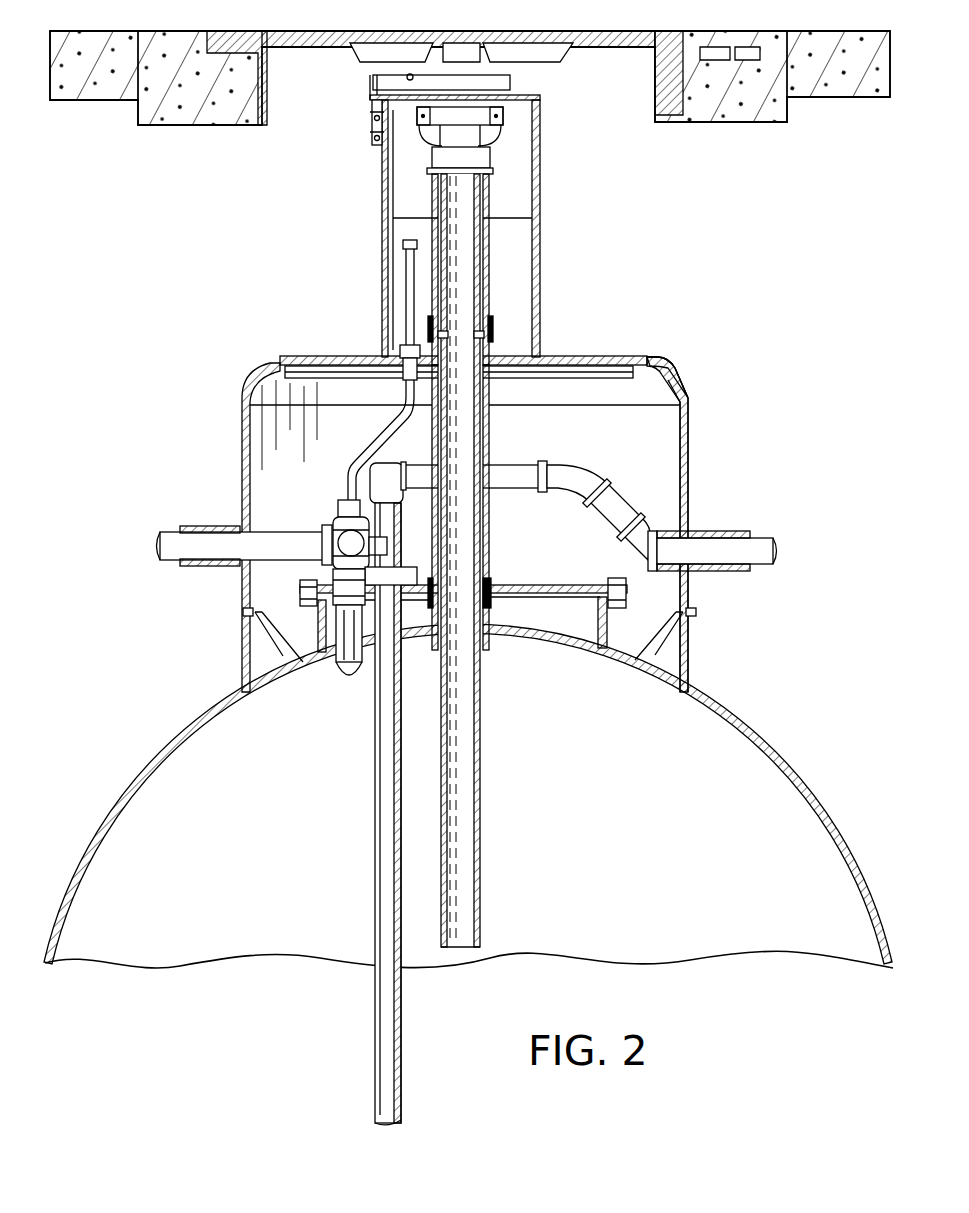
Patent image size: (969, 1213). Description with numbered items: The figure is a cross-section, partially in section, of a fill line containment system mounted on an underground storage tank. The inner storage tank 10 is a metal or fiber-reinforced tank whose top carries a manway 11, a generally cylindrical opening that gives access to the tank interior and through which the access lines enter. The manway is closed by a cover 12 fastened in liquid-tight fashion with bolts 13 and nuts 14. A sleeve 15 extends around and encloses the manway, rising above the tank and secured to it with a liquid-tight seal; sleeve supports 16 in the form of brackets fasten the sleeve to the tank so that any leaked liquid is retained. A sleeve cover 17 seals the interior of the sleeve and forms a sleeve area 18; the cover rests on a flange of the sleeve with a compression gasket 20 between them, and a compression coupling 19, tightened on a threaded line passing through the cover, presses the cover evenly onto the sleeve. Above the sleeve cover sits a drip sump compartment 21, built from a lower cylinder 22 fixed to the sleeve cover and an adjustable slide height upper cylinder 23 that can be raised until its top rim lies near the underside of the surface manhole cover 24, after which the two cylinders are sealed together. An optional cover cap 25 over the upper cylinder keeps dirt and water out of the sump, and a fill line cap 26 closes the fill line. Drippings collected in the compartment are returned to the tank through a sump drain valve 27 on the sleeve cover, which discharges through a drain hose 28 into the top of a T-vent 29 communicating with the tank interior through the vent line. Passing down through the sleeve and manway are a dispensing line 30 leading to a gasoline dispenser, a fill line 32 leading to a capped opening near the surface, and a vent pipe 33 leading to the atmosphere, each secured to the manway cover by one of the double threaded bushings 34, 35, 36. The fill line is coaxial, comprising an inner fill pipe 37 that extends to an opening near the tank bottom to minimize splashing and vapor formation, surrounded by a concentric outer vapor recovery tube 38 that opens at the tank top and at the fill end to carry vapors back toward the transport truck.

The inner storage tank 10 is at (187, 738).
The manway 11 is at (607, 628).
The cover 12 is at (538, 583).
The bolts 13 is at (612, 578).
The nuts 14 is at (623, 597).
The sleeve 15 is at (688, 440).
The sleeve supports 16 is at (262, 632).
The sleeve cover 17 is at (600, 356).
The sleeve area 18 is at (642, 405).
The compression coupling 19 is at (492, 325).
The compression gasket 20 is at (284, 376).
The drip sump compartment 21 is at (540, 208).
The lower cylinder 22 is at (387, 280).
The adjustable slide height upper cylinder 23 is at (382, 168).
The surface manhole cover 24 is at (566, 31).
The cover cap 25 is at (528, 97).
The fill line cap 26 is at (500, 121).
The sump drain valve 27 is at (403, 357).
The drain hose 28 is at (392, 423).
The T-vent 29 is at (341, 545).
The dispensing line 30 is at (753, 545).
The fill line 32 is at (490, 269).
The vent pipe 33 is at (176, 543).
The double threaded bushing 34 is at (394, 560).
The double threaded bushing 35 is at (491, 603).
The double threaded bushing 36 is at (340, 587).
The inner fill pipe 37 is at (481, 787).
The outer vapor recovery tube 38 is at (490, 418).